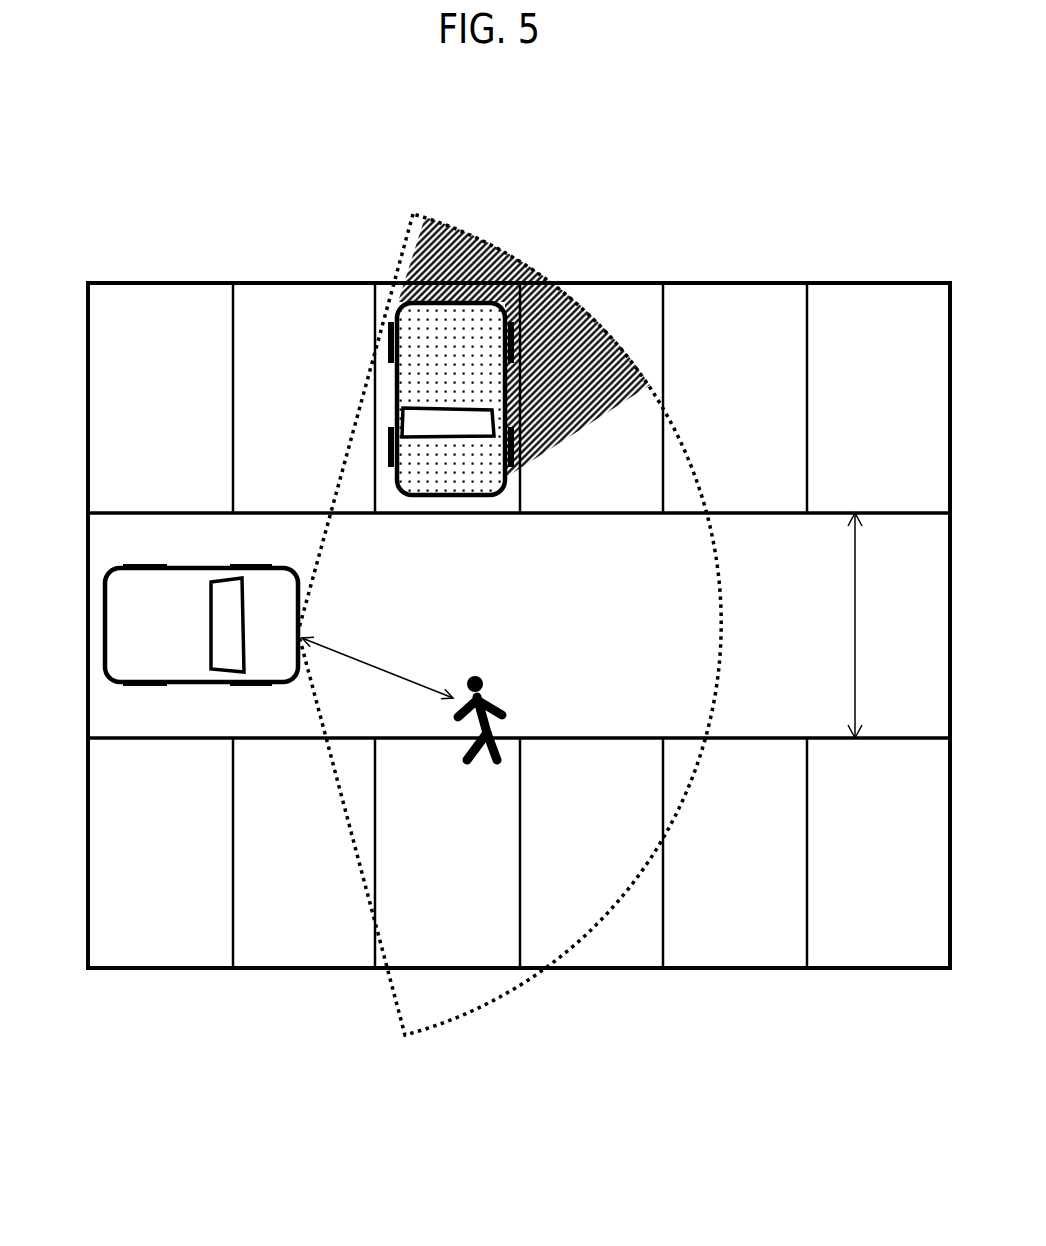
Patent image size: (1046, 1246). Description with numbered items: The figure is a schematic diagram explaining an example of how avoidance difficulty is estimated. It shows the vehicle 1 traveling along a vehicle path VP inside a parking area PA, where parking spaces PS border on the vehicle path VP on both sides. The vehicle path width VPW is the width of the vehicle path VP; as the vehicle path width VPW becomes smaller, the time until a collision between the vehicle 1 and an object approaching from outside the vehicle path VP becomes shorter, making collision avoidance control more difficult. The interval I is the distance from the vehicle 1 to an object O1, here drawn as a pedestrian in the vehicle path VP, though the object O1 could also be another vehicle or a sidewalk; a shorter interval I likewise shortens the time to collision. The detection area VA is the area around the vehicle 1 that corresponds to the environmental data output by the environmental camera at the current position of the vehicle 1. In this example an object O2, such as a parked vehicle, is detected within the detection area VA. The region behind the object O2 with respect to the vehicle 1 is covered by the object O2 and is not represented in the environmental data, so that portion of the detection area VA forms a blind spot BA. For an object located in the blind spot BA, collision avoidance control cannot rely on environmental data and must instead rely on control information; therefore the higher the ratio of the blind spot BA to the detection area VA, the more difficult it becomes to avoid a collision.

The vehicle 1 is at (108, 588).
The vehicle path VP is at (113, 717).
The vehicle path width VPW is at (889, 625).
The parking area PA is at (848, 217).
The parking spaces PS is at (747, 955).
The detection area VA is at (458, 1018).
The blind spot BA is at (513, 262).
The object O1 is at (503, 700).
The object O2 is at (397, 302).
The interval I is at (377, 665).